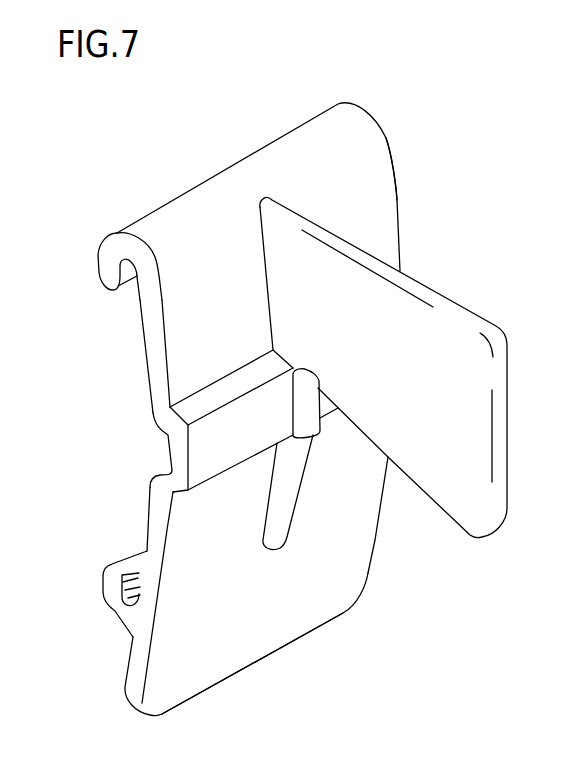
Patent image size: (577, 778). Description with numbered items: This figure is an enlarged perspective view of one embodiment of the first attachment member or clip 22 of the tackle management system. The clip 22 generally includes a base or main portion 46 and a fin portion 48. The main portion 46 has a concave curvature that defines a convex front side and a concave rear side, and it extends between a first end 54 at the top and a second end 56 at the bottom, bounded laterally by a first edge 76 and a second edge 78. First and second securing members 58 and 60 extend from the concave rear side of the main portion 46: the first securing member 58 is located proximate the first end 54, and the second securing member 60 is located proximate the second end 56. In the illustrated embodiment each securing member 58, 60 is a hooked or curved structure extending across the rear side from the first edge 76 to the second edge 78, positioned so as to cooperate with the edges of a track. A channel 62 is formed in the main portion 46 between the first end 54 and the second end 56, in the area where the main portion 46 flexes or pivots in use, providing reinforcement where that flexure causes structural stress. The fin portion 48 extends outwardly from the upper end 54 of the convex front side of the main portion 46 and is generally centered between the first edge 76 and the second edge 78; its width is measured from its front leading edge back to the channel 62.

The first attachment member or clip 22 is at (362, 649).
The main portion 46 is at (357, 498).
The fin portion 48 is at (442, 327).
The first end 54 is at (352, 120).
The second end 56 is at (207, 672).
The first securing member 58 is at (107, 266).
The second securing member 60 is at (110, 590).
The channel 62 is at (215, 460).
The first edge 76 is at (157, 513).
The second edge 78 is at (397, 198).